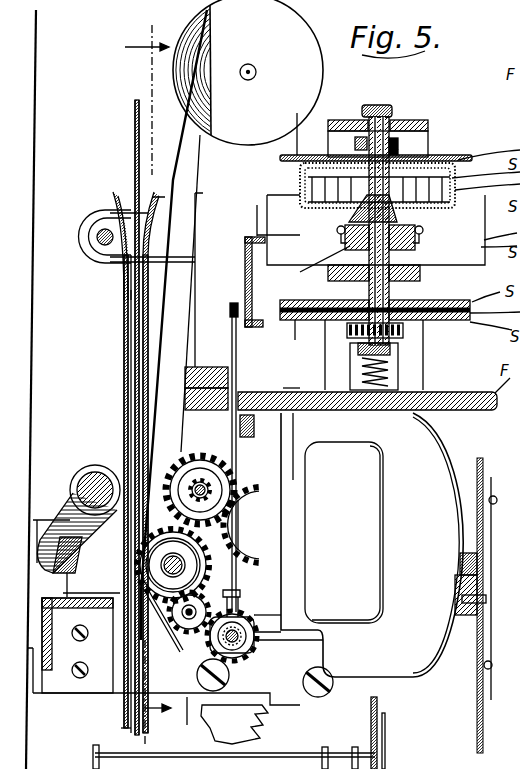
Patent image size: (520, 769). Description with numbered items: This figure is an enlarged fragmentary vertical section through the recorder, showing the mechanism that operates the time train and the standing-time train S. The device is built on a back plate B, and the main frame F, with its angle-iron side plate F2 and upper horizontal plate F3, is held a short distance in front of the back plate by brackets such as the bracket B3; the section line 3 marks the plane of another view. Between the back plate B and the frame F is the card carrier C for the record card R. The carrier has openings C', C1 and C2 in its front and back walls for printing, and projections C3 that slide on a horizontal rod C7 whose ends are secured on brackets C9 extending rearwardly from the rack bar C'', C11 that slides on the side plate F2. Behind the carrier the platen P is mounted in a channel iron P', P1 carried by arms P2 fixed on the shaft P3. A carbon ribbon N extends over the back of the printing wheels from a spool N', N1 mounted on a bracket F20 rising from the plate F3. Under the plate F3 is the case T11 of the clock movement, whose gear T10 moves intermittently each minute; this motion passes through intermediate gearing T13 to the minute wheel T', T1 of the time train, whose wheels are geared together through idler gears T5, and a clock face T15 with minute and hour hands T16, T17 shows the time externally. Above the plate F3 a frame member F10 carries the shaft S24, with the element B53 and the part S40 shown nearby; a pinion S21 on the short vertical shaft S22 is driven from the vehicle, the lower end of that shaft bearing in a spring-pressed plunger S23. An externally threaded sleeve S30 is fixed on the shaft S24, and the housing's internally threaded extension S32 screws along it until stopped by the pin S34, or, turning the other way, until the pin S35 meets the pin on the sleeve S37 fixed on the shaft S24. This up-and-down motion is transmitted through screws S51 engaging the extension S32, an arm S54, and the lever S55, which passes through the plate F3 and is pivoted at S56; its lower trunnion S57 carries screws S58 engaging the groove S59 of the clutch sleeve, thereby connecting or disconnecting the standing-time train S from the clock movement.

The section line 3 is at (148, 379).
The back plate B is at (39, 82).
The record card R is at (135, 127).
The opening C' is at (101, 460).
The opening C1 is at (121, 350).
The opening C2 is at (140, 384).
The projection C3 is at (102, 222).
The horizontal rod C7 is at (92, 247).
The bracket C9 is at (126, 280).
The spool N' is at (251, 72).
The spool N1 is at (283, 17).
The carbon ribbon N is at (174, 345).
The bracket F20 is at (214, 293).
The shaft S24 is at (399, 118).
The frame member F10 is at (344, 119).
The plate S40 is at (367, 130).
The sleeve S37 is at (425, 146).
The pin S35 is at (430, 160).
The externally threaded sleeve S30 is at (405, 222).
The internally threaded extension S32 is at (350, 232).
The bracket B53 is at (256, 232).
The arm S54 is at (245, 248).
The screws S51 is at (314, 269).
The short vertical shaft S22 is at (420, 300).
The pinion S21 is at (403, 334).
The spring-pressed plunger S23 is at (350, 348).
The pin S34 is at (288, 332).
The lever S55 is at (232, 328).
The main frame F is at (232, 358).
The horizontal plate F3 is at (276, 383).
The standing-time train S is at (372, 545).
The case T11 is at (344, 532).
The pivot S56 is at (254, 430).
The intermediate gearing T13 is at (212, 463).
The minute wheel T' is at (206, 549).
The minute wheel T1 is at (200, 555).
The gear T10 is at (235, 580).
The idler gears T5 is at (240, 592).
The screws S58 is at (256, 636).
The trunnion S57 is at (265, 617).
The groove S59 is at (270, 680).
The bracket B3 is at (300, 676).
The shaft P3 is at (103, 467).
The arms P2 is at (70, 495).
The channel iron P' is at (79, 555).
The channel iron P1 is at (73, 545).
The platen P is at (84, 581).
The card carrier C is at (163, 659).
The side plate F2 is at (192, 712).
The rack bar C'' is at (252, 724).
The rack bar C11 is at (245, 722).
The clock face T15 is at (480, 458).
The minute hand T16 is at (489, 502).
The hour hand T17 is at (484, 667).